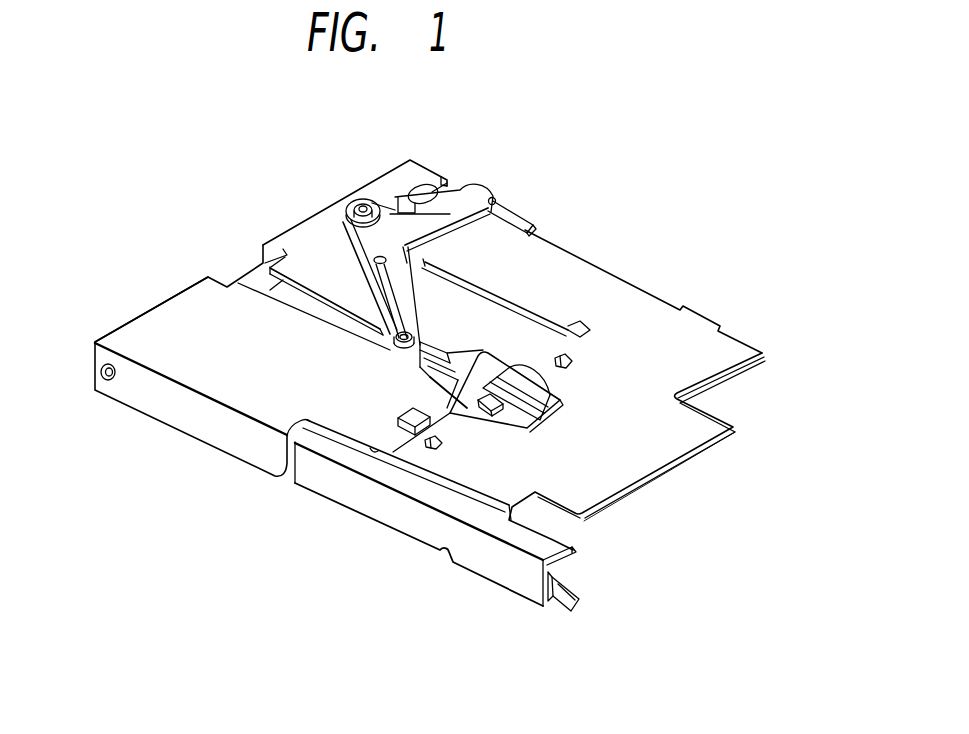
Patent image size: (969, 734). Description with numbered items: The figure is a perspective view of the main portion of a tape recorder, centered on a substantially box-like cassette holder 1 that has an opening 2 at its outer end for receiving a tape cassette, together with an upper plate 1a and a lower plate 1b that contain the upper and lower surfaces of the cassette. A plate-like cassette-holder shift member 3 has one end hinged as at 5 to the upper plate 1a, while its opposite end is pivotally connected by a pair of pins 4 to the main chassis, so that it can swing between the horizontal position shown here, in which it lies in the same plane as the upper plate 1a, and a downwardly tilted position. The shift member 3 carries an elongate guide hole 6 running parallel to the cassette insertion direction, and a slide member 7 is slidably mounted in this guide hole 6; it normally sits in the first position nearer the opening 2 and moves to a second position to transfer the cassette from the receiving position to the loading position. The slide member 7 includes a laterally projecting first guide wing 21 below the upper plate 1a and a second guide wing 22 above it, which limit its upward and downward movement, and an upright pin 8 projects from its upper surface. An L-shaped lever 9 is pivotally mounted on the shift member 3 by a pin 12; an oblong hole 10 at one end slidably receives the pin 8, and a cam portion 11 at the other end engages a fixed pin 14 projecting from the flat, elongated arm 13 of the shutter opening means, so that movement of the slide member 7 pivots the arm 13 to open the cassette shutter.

The cassette holder 1 is at (710, 308).
The upper plate 1a is at (627, 293).
The lower plate 1b is at (580, 590).
The opening 2 is at (623, 510).
The cassette-holder shift member 3 is at (168, 313).
The pins 4 is at (110, 383).
The hinge 5 is at (570, 362).
The guide hole 6 is at (323, 310).
The slide member 7 is at (520, 387).
The upright pin 8 is at (387, 343).
The L-shaped lever 9 is at (357, 240).
The oblong hole 10 is at (377, 283).
The cam portion 11 is at (470, 193).
The pin 12 is at (363, 193).
The arm 13 is at (525, 213).
The fixed pin 14 is at (497, 200).
The first guide wing 21 is at (500, 410).
The second guide wing 22 is at (453, 323).